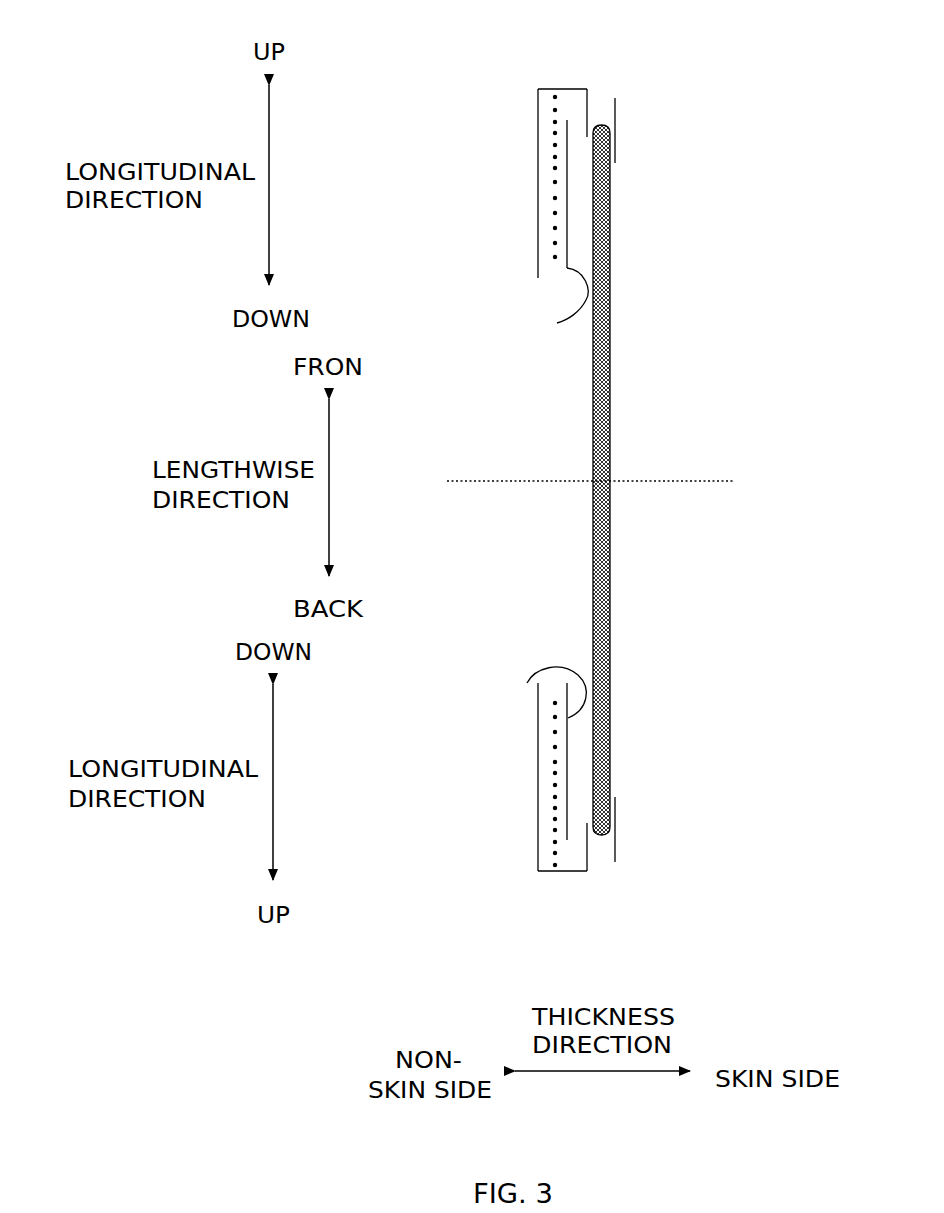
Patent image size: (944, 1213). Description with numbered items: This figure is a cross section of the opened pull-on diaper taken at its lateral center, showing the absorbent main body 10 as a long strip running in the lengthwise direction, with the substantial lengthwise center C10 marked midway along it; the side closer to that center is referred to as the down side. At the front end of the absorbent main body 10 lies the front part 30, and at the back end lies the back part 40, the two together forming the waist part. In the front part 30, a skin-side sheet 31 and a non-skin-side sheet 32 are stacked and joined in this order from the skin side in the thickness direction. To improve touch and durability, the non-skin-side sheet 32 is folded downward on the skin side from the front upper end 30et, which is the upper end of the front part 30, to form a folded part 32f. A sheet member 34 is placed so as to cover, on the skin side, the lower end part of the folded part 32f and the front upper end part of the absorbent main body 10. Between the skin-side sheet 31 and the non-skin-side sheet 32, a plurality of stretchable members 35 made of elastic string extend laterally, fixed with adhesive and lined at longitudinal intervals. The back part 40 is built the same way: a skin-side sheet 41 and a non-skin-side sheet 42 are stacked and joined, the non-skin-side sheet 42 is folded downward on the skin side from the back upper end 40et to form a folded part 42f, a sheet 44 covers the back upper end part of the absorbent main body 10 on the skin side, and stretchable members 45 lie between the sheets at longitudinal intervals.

The absorbent main body 10 is at (585, 418).
The lengthwise center C10 is at (619, 481).
The front part 30 is at (550, 177).
The front upper end 30et is at (565, 89).
The skin-side sheet 31 is at (557, 323).
The non-skin-side sheet 32 is at (571, 147).
The folded part 32f is at (587, 96).
The sheet member 34 is at (615, 128).
The stretchable members 35 is at (553, 133).
The back part 40 is at (549, 806).
The back upper end 40et is at (560, 871).
The skin-side sheet 41 is at (530, 692).
The non-skin-side sheet 42 is at (572, 814).
The folded part 42f is at (587, 860).
The sheet 44 is at (615, 823).
The stretchable members 45 is at (553, 818).